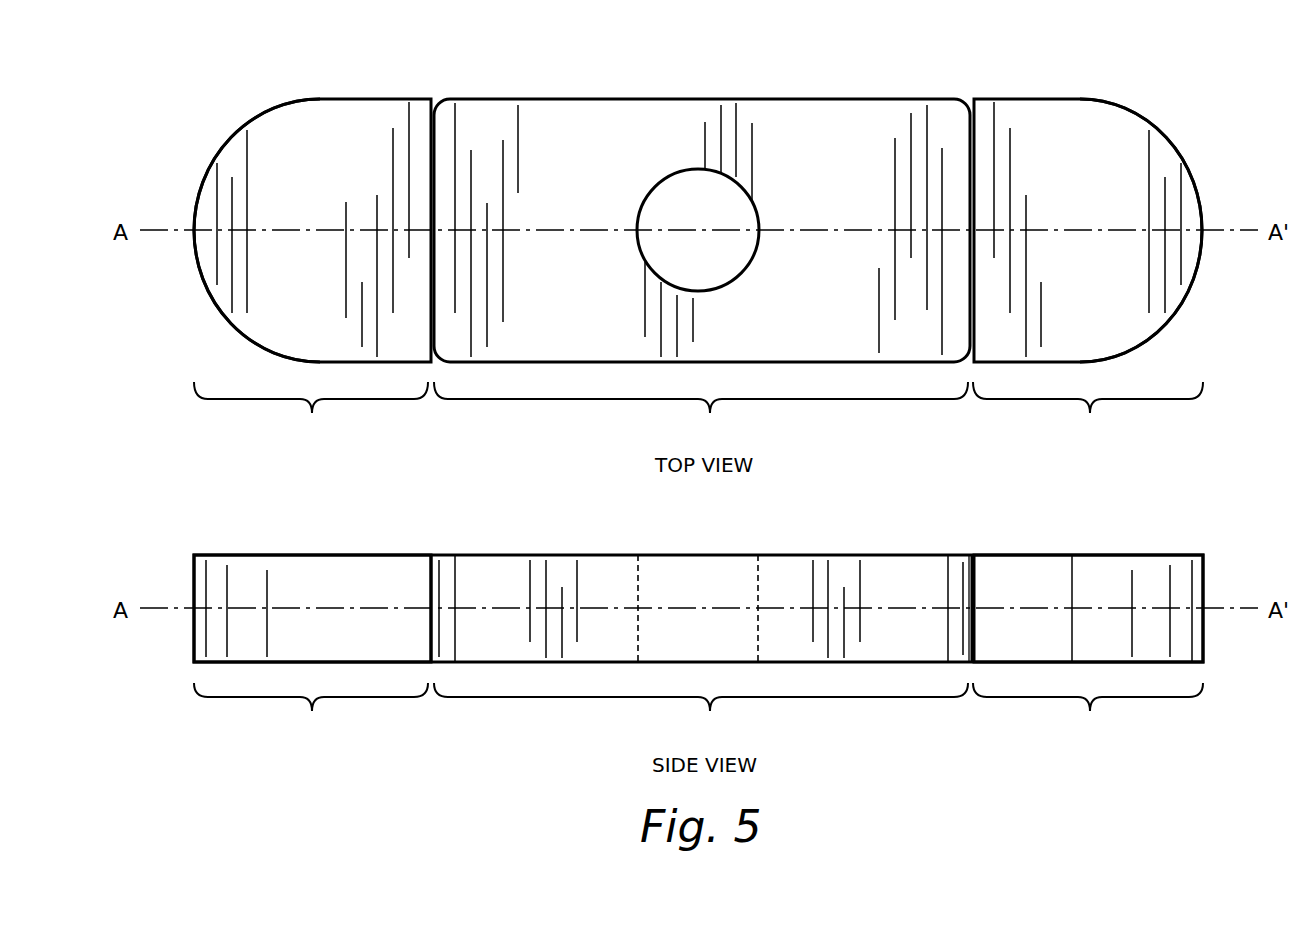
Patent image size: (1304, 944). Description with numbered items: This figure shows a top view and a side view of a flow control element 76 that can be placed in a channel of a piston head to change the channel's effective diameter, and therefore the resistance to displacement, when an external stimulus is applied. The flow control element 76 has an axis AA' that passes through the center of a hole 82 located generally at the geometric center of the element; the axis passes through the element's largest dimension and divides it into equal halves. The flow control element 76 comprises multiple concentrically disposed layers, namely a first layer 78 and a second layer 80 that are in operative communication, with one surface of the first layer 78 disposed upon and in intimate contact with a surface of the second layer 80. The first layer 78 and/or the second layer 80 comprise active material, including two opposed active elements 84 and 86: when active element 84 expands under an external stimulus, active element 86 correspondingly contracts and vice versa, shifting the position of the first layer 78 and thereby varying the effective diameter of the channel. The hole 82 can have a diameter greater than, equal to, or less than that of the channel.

The flow control element 76 is at (1212, 135).
The first layer 78 is at (701, 424).
The second layer 80 is at (698, 424).
The hole 82 is at (690, 172).
The active element 84 is at (1028, 122).
The active element 86 is at (357, 117).